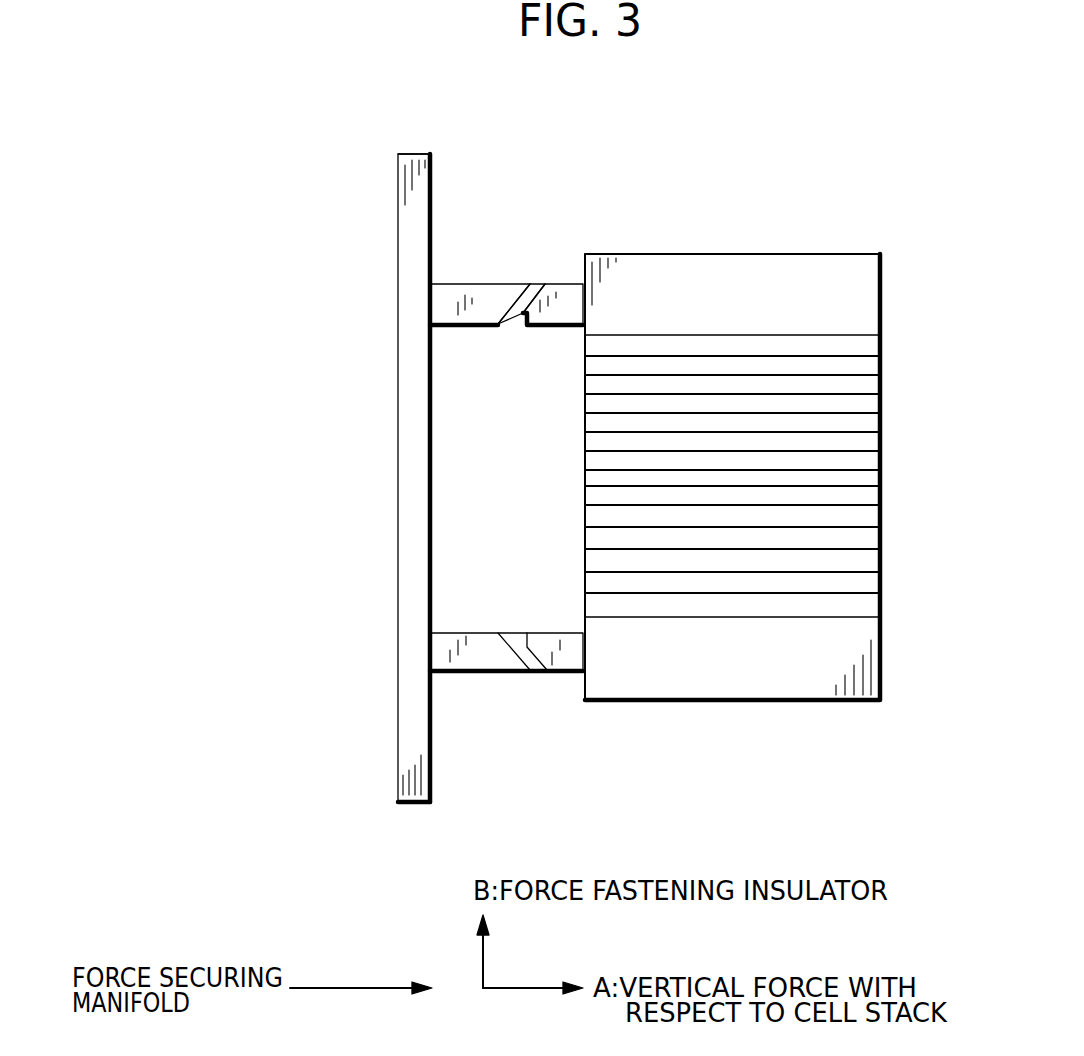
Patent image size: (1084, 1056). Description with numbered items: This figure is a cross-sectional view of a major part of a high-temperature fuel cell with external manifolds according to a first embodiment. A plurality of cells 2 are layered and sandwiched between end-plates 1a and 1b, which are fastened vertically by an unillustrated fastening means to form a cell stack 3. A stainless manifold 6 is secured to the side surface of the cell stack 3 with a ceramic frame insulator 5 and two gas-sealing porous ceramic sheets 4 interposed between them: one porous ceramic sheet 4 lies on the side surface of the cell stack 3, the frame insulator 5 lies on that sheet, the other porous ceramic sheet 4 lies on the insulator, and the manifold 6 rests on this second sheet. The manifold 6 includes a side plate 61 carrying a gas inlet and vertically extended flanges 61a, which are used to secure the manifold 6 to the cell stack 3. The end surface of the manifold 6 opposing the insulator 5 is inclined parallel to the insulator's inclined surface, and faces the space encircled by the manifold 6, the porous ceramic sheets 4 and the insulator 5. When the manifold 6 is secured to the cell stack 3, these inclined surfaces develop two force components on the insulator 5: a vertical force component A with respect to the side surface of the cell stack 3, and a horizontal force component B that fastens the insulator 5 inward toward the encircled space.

The end-plate 1a is at (732, 294).
The end-plate 1b is at (732, 658).
The cell 2 is at (769, 469).
The cell stack 3 is at (769, 478).
The porous ceramic sheet 4 is at (540, 283).
The frame insulator 5 is at (557, 272).
The manifold 6 is at (506, 703).
The side plate 61 is at (398, 370).
The flange 61a is at (420, 208).